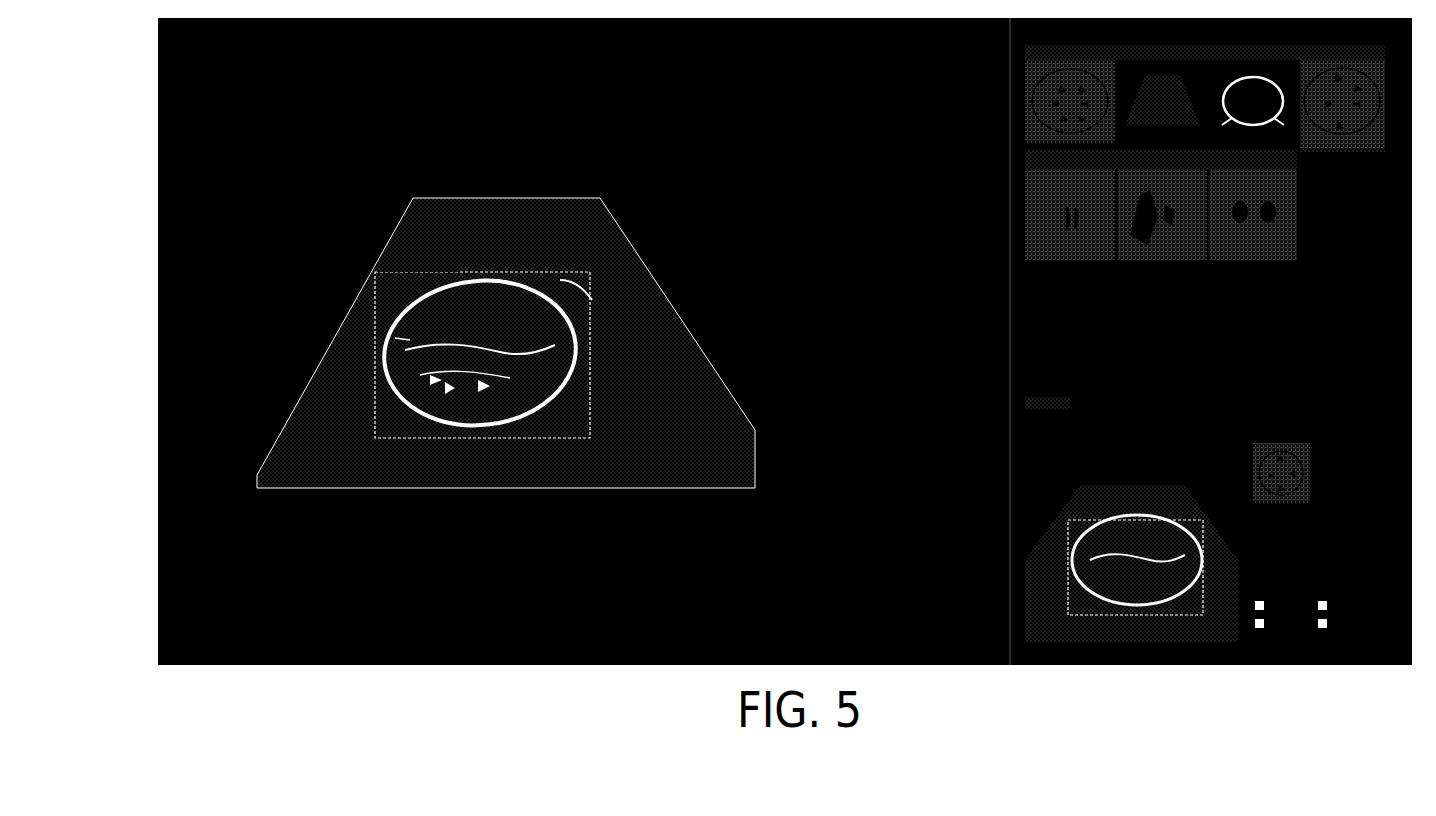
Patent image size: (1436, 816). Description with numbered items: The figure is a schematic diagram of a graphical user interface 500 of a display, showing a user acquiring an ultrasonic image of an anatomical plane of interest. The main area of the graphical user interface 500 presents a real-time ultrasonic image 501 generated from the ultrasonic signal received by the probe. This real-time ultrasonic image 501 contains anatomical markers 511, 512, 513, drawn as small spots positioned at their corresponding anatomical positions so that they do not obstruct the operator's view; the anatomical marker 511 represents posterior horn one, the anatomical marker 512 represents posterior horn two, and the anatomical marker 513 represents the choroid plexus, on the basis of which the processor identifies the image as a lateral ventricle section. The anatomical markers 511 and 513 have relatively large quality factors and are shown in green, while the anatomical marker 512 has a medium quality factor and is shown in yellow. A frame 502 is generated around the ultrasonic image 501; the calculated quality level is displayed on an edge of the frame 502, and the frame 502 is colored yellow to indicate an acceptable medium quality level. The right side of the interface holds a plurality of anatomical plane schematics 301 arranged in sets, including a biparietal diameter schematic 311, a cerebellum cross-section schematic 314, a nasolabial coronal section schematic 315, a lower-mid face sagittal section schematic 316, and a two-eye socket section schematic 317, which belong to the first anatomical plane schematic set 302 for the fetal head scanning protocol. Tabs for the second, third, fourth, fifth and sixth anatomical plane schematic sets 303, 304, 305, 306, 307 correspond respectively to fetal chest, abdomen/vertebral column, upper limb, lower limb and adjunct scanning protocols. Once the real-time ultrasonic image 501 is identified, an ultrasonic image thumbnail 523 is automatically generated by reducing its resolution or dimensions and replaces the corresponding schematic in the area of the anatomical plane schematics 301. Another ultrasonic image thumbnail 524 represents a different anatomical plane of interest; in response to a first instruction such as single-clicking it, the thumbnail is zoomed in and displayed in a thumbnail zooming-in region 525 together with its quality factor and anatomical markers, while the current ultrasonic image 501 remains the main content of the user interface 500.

The graphical user interface 500 is at (306, 74).
The real-time ultrasonic image 501 is at (428, 186).
The frame 502 is at (593, 302).
The anatomical marker 511 is at (372, 357).
The anatomical marker 512 is at (375, 431).
The anatomical marker 513 is at (484, 385).
The anatomical plane schematics 301 is at (944, 98).
The biparietal diameter schematic 311 is at (1022, 117).
The cerebellum cross-section schematic 314 is at (1340, 152).
The nasolabial coronal section schematic 315 is at (1052, 266).
The lower-mid face sagittal section schematic 316 is at (1162, 266).
The two-eye socket section schematic 317 is at (1250, 266).
The first anatomical plane schematic set 302 is at (1023, 402).
The second anatomical plane schematic set 303 is at (1092, 412).
The third anatomical plane schematic set 304 is at (1153, 415).
The fourth anatomical plane schematic set 305 is at (1208, 412).
The fifth anatomical plane schematic set 306 is at (1265, 393).
The sixth anatomical plane schematic set 307 is at (1335, 402).
The ultrasonic image thumbnail 523 is at (1170, 55).
The ultrasonic image thumbnail 524 is at (1283, 55).
The thumbnail zooming-in region 525 is at (1010, 525).